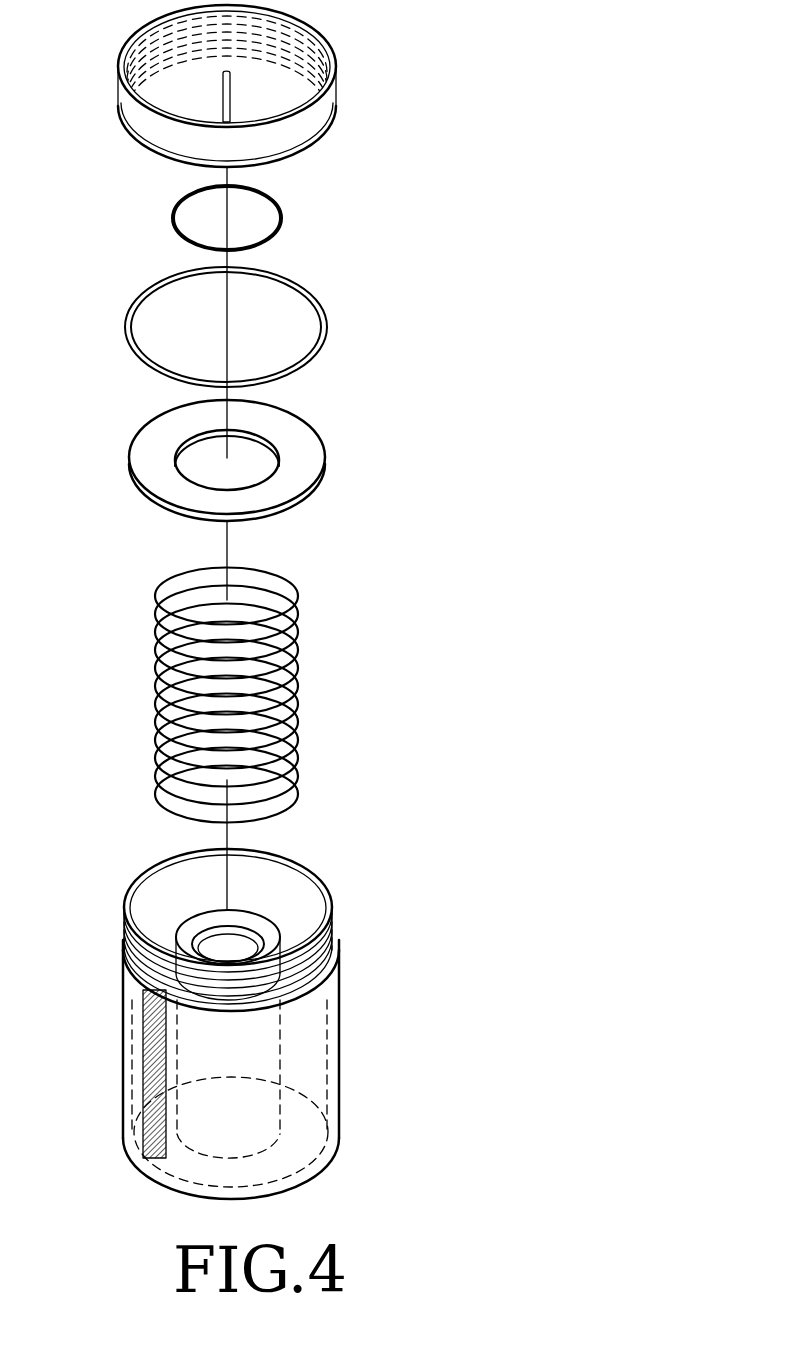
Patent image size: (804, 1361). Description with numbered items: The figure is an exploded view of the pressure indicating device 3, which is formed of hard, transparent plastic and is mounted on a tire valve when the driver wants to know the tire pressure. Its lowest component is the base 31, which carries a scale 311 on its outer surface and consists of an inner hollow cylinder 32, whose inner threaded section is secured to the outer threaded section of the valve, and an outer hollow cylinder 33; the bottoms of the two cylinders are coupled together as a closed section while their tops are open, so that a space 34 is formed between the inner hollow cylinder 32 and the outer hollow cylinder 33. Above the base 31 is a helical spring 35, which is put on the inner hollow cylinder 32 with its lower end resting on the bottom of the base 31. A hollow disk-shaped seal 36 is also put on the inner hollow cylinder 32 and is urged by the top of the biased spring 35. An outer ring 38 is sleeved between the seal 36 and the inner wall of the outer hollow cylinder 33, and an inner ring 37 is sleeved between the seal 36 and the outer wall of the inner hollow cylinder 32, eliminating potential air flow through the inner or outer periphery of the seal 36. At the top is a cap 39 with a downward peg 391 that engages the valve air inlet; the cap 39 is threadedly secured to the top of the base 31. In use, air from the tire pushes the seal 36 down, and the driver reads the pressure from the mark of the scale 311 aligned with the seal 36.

The pressure indicating device 3 is at (433, 567).
The base 31 is at (383, 968).
The scale 311 is at (150, 1052).
The inner hollow cylinder 32 is at (270, 1033).
The outer hollow cylinder 33 is at (340, 1107).
The space 34 is at (297, 927).
The helical spring 35 is at (298, 705).
The hollow disk-shaped seal 36 is at (310, 455).
The inner ring 37 is at (281, 218).
The outer ring 38 is at (327, 330).
The cap 39 is at (318, 110).
The downward peg 391 is at (233, 85).